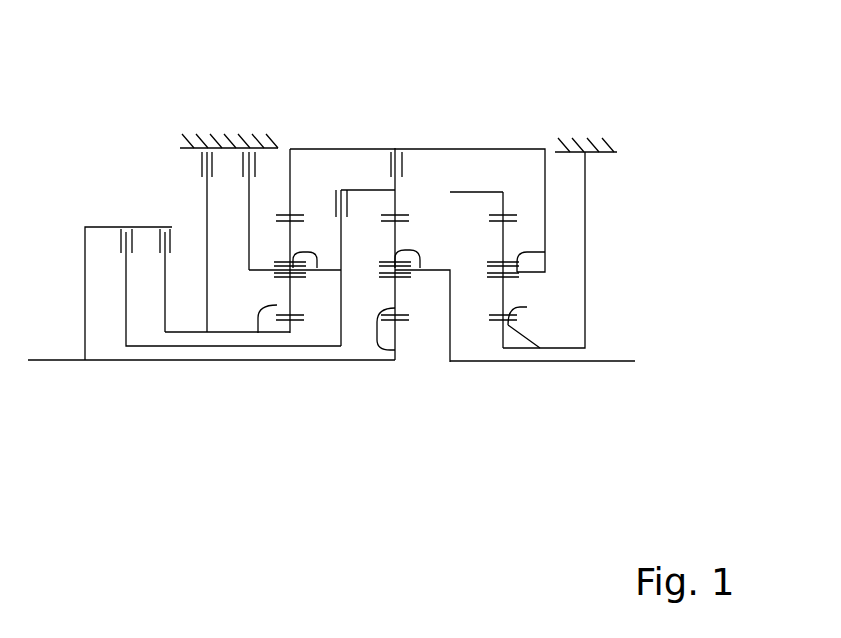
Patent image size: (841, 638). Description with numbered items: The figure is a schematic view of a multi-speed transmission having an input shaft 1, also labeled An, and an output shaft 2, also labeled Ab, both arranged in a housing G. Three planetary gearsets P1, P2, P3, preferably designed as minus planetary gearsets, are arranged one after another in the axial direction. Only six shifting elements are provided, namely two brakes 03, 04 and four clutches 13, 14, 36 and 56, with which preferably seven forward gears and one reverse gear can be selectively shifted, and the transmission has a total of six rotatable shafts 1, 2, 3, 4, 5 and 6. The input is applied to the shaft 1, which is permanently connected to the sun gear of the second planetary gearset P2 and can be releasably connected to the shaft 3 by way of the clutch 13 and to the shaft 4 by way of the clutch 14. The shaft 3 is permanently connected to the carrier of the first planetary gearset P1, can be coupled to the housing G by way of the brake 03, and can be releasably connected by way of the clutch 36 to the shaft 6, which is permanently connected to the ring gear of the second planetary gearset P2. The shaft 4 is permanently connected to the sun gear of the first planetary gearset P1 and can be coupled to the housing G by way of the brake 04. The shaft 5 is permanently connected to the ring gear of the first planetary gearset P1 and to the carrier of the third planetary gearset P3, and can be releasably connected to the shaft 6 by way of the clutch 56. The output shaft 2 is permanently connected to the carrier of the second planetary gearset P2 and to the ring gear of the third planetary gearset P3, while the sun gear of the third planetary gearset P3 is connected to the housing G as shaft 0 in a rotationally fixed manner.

The input shaft An is at (60, 361).
The output shaft Ab is at (635, 362).
The first planetary gearset P1 is at (298, 192).
The second planetary gearset P2 is at (405, 206).
The third planetary gearset P3 is at (508, 243).
The brake 03 is at (252, 160).
The brake 04 is at (202, 160).
The clutch 13 is at (120, 227).
The clutch 14 is at (160, 227).
The clutch 36 is at (348, 212).
The clutch 56 is at (397, 148).
The housing G is at (582, 140).
The shaft 0 is at (527, 307).
The shaft 1 is at (403, 325).
The shaft 2 is at (493, 215).
The shaft 3 is at (287, 268).
The shaft 4 is at (279, 320).
The shaft 5 is at (333, 149).
The shaft 6 is at (377, 190).